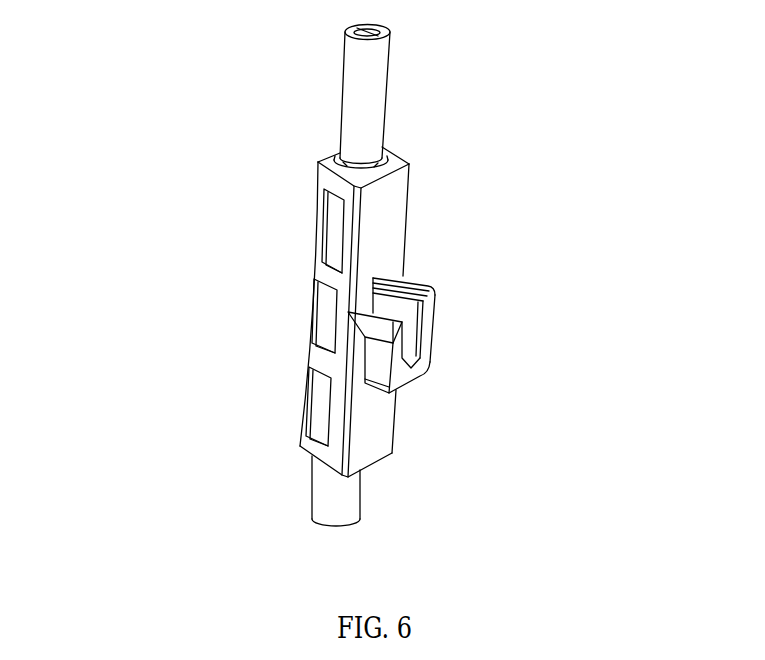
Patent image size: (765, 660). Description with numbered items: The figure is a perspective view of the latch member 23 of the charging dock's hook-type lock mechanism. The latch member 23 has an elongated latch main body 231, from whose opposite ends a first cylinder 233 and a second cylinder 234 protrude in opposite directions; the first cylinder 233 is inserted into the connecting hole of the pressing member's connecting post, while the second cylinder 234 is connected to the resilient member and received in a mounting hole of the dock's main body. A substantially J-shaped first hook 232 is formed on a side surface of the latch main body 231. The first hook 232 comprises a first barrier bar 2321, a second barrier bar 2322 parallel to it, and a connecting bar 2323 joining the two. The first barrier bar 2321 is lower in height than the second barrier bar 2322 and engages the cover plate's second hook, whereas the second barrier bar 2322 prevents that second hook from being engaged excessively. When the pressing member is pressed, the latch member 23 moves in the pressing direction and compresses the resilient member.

The latch member 23 is at (86, 125).
The first cylinder 233 is at (367, 127).
The latch main body 231 is at (317, 272).
The second cylinder 234 is at (327, 505).
The first hook 232 is at (637, 277).
The connecting bar 2323 is at (433, 318).
The first barrier bar 2321 is at (414, 352).
The second barrier bar 2322 is at (422, 374).